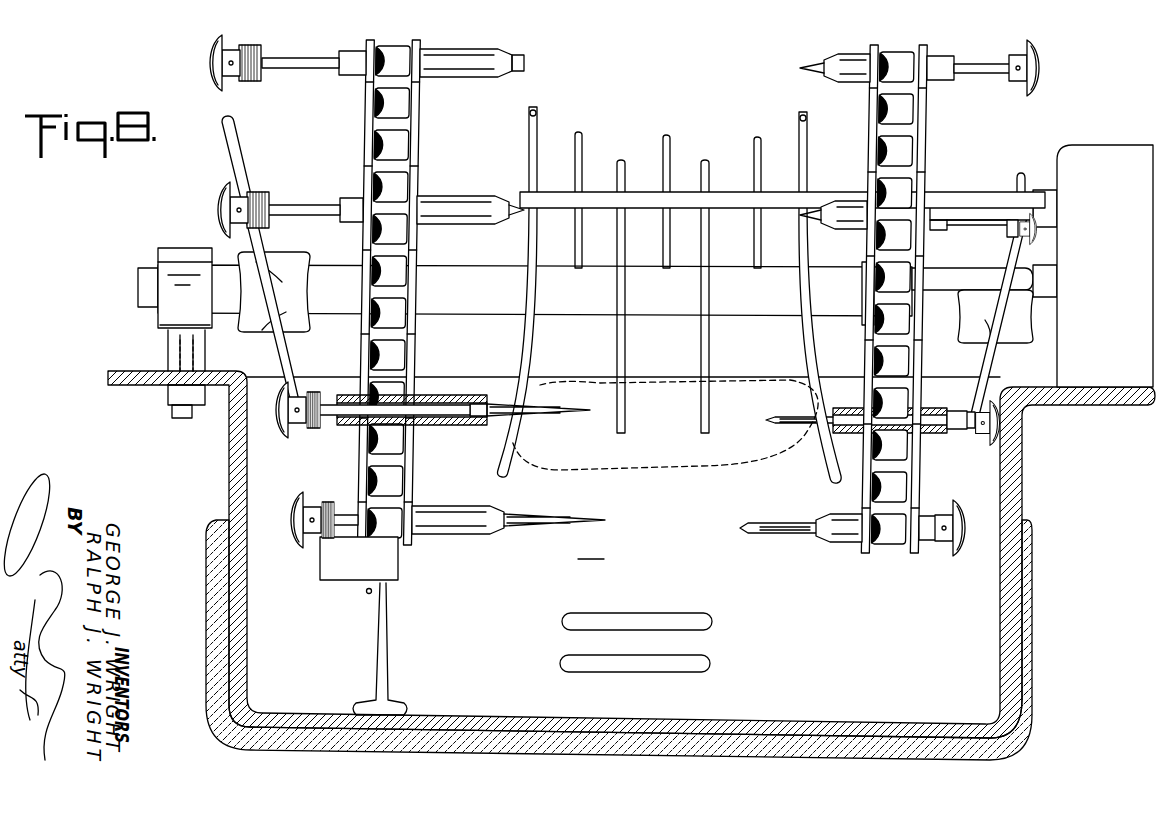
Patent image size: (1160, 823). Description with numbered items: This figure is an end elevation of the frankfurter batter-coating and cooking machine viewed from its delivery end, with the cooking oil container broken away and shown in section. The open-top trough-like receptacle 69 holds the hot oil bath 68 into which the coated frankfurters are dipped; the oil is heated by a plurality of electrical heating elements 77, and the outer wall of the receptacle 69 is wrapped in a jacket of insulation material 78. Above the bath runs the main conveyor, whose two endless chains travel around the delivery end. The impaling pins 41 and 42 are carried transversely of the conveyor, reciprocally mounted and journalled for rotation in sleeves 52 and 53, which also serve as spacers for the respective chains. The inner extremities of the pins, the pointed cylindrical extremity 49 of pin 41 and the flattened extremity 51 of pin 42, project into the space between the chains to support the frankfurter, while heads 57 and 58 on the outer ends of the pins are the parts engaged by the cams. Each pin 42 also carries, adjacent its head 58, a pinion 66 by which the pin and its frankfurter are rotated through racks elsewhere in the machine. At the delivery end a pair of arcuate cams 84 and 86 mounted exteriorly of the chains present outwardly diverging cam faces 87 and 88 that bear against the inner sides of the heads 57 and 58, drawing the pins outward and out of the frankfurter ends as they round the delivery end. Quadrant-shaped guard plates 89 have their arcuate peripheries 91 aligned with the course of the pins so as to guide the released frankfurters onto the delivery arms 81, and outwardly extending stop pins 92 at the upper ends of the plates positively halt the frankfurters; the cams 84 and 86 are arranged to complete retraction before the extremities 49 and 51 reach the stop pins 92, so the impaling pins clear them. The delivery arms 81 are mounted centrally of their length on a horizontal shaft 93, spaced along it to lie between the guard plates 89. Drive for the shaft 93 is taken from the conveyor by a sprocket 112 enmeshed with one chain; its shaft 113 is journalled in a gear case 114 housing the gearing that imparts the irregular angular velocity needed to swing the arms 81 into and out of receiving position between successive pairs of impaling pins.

The impaling pin 41 is at (958, 205).
The impaling pin 42 is at (455, 50).
The pointed cylindrical extremity 49 is at (806, 388).
The flattened extremity 51 is at (526, 56).
The sleeve 52 is at (928, 142).
The sleeve 53 is at (420, 128).
The head 57 is at (1008, 232).
The head 58 is at (208, 60).
The pinion 66 is at (254, 46).
The hot oil bath 68 is at (591, 548).
The receptacle 69 is at (229, 582).
The electrical heating element 77 is at (712, 616).
The insulation material 78 is at (208, 727).
The delivery arm 81 is at (667, 140).
The cam 84 is at (999, 366).
The cam 86 is at (288, 366).
The cam face 87 is at (1040, 245).
The cam face 88 is at (255, 252).
The guard plate 89 is at (796, 394).
The arcuate periphery 91 is at (540, 140).
The stop pin 92 is at (540, 113).
The horizontal shaft 93 is at (780, 192).
The sprocket 112 is at (862, 255).
The shaft 113 is at (932, 268).
The gear case 114 is at (1092, 145).